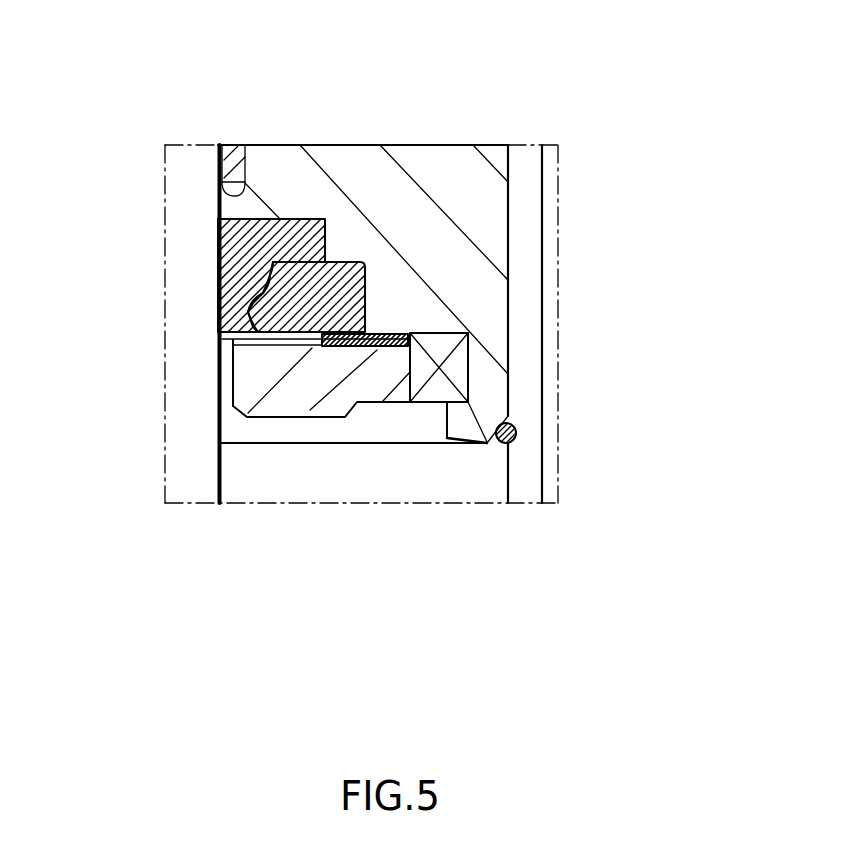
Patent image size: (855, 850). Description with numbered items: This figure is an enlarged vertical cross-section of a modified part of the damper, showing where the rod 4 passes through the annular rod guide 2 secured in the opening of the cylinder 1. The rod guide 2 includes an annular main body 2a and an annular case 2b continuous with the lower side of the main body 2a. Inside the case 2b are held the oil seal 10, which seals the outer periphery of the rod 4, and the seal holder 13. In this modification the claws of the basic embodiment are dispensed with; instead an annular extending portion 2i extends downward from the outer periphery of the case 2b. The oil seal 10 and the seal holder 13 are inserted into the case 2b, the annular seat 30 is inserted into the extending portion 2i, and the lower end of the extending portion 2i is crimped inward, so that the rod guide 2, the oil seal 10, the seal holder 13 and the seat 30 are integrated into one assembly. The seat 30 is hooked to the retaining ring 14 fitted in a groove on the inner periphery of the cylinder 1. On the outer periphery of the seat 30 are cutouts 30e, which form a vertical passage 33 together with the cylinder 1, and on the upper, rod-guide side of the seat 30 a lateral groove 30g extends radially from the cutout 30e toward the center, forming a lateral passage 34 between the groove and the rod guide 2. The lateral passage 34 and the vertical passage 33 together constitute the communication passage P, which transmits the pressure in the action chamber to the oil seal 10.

The cylinder 1 is at (533, 192).
The rod guide 2 is at (447, 140).
The main body 2a is at (320, 155).
The case 2b is at (498, 287).
The extending portion 2i is at (507, 381).
The rod 4 is at (188, 168).
The oil seal 10 is at (220, 257).
The seal holder 13 is at (219, 306).
The retaining ring 14 is at (515, 444).
The seat 30 is at (273, 430).
The cutout 30e is at (447, 418).
The lateral groove 30g is at (320, 347).
The vertical passage 33 is at (462, 353).
The lateral passage 34 is at (377, 352).
The communication passage P is at (446, 430).